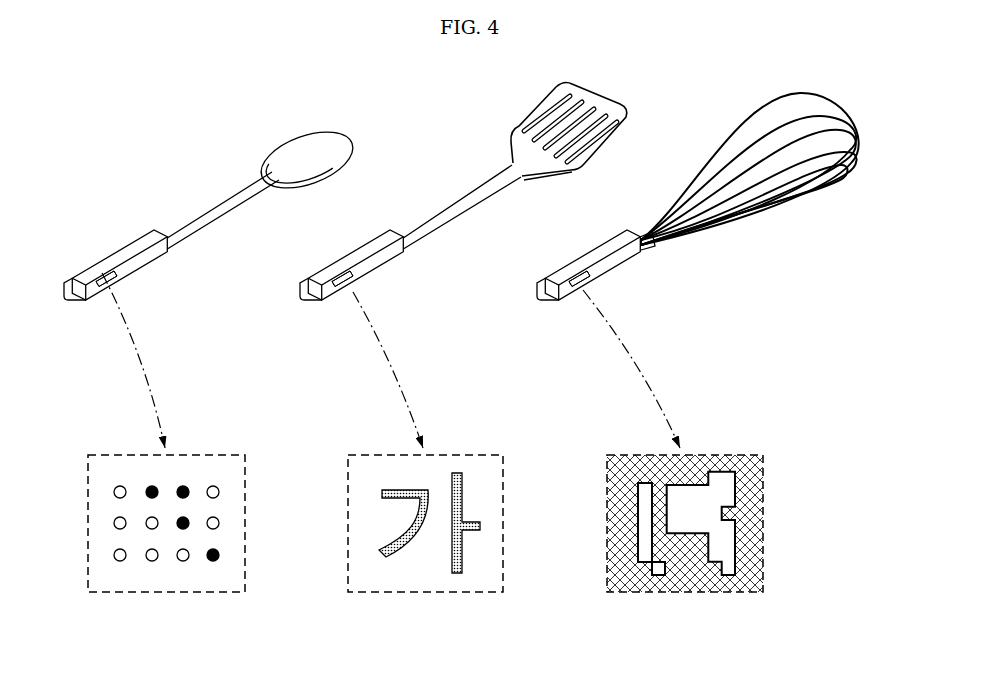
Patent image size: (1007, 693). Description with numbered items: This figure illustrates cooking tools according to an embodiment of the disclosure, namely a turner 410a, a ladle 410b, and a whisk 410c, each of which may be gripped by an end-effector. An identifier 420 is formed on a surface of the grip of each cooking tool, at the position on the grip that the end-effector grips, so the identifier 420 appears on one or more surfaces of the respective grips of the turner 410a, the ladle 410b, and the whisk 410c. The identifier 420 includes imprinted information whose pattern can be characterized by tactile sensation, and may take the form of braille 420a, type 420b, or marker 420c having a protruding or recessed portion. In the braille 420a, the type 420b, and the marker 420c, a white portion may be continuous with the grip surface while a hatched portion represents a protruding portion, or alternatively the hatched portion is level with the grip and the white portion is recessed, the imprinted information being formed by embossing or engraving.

The turner 410a is at (115, 238).
The ladle 410b is at (386, 280).
The whisk 410c is at (623, 280).
The identifier 420 is at (97, 270).
The braille 420a is at (167, 592).
The type 420b is at (425, 592).
The marker 420c is at (685, 592).